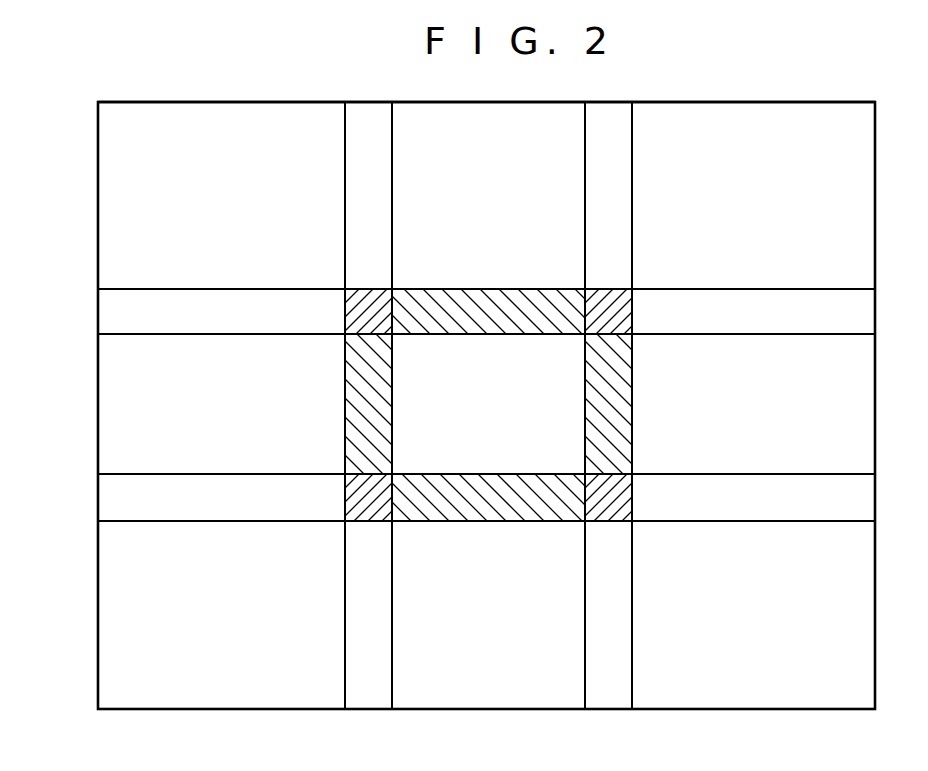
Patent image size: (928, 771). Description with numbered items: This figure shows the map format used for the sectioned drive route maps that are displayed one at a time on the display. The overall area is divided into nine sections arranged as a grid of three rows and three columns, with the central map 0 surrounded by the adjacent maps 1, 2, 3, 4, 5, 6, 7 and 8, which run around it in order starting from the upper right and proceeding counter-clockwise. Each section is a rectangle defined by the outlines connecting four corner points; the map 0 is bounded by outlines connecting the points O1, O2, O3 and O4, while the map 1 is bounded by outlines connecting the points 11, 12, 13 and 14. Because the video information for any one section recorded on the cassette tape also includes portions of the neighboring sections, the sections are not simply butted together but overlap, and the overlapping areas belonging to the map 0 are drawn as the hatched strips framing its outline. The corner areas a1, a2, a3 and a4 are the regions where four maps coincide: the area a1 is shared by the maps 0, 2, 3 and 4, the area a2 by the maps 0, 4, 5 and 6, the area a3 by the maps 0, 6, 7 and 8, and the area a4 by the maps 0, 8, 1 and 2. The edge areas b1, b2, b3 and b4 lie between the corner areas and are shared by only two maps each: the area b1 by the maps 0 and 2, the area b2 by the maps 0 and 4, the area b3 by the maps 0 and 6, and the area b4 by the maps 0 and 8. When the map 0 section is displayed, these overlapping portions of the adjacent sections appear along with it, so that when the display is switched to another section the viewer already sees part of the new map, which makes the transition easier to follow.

The outline point of map "1" 11 is at (100, 101).
The outline point of map "1" 12 is at (98, 333).
The outline point of map "1" 13 is at (393, 337).
The outline point of map "1" 14 is at (393, 102).
The map "0" section 0 is at (483, 352).
The map "1" section 1 is at (862, 193).
The map "2" section 2 is at (542, 113).
The map "3" section 3 is at (288, 112).
The map "4" section 4 is at (110, 403).
The map "5" section 5 is at (204, 692).
The map "6" section 6 is at (481, 693).
The map "7" section 7 is at (742, 692).
The map "8" section 8 is at (863, 387).
The outline point of map "0" O1 is at (345, 290).
The outline point of map "0" O2 is at (344, 522).
The outline point of map "0" O3 is at (632, 522).
The outline point of map "0" O4 is at (632, 292).
The overlapping area a1 is at (377, 298).
The overlapping area a2 is at (350, 498).
The overlapping area a3 is at (622, 495).
The overlapping area a4 is at (623, 317).
The overlapping area b1 is at (550, 303).
The overlapping area b2 is at (352, 406).
The overlapping area b3 is at (497, 508).
The overlapping area b4 is at (623, 407).